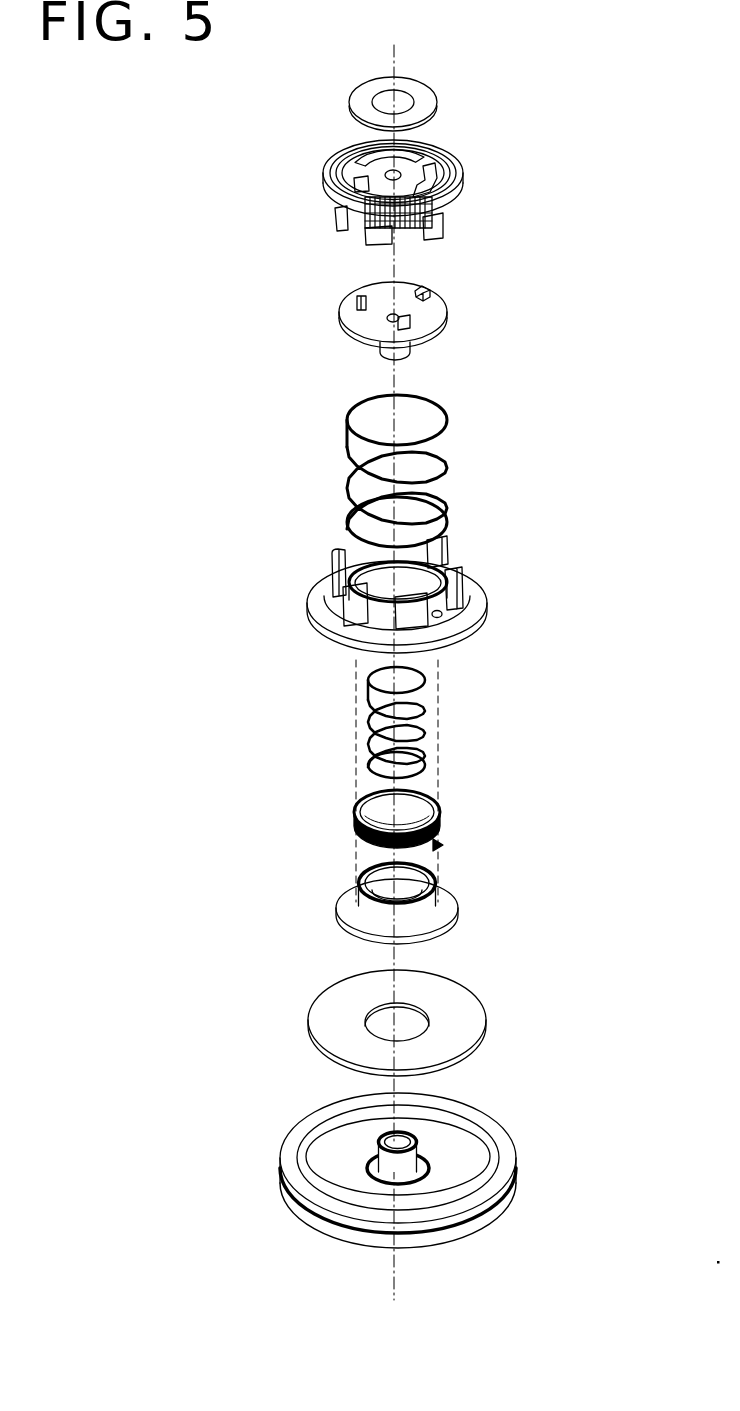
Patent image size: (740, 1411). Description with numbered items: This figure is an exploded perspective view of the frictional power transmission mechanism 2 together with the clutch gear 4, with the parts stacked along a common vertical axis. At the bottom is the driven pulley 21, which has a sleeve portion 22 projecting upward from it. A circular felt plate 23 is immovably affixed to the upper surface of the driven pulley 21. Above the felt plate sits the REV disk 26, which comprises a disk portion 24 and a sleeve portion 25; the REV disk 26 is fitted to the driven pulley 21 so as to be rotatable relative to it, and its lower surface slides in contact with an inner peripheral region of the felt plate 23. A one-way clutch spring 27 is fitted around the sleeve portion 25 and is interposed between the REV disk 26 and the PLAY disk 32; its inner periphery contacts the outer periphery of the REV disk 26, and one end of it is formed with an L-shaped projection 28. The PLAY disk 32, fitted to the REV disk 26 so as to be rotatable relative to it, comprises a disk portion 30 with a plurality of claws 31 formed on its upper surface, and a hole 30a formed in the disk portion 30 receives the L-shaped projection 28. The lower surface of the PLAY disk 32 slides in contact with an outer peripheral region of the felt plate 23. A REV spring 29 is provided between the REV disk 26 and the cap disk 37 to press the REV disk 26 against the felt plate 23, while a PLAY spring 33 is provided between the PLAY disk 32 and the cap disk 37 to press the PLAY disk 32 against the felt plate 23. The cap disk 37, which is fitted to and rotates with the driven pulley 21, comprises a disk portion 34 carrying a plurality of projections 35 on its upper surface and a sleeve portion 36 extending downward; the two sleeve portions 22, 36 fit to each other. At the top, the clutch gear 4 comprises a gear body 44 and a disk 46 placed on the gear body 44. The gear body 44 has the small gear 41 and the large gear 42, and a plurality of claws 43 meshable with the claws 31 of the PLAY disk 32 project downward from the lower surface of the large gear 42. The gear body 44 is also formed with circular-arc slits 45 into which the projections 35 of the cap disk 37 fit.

The transmission mechanism 2 is at (630, 628).
The clutch gear 4 is at (589, 66).
The driven pulley 21 is at (507, 1162).
The sleeve portion 22 is at (430, 1159).
The circular felt plate 23 is at (470, 998).
The disk portion 24 is at (457, 913).
The sleeve portion 25 is at (443, 883).
The REV disk 26 is at (466, 897).
The one-way clutch spring 27 is at (443, 817).
The L-shaped projection 28 is at (440, 847).
The REV spring 29 is at (430, 720).
The disk portion 30 is at (434, 601).
The hole 30a is at (443, 613).
The claws 31 is at (452, 547).
The PLAY disk 32 is at (431, 582).
The PLAY spring 33 is at (457, 447).
The disk portion 34 is at (433, 315).
The projections 35 is at (420, 285).
The sleeve portion 36 is at (454, 335).
The cap disk 37 is at (461, 298).
The small gear 41 is at (435, 146).
The large gear 42 is at (448, 169).
The claws 43 is at (453, 200).
The gear body 44 is at (423, 171).
The circular-arc slits 45 is at (345, 162).
The disk 46 is at (437, 100).